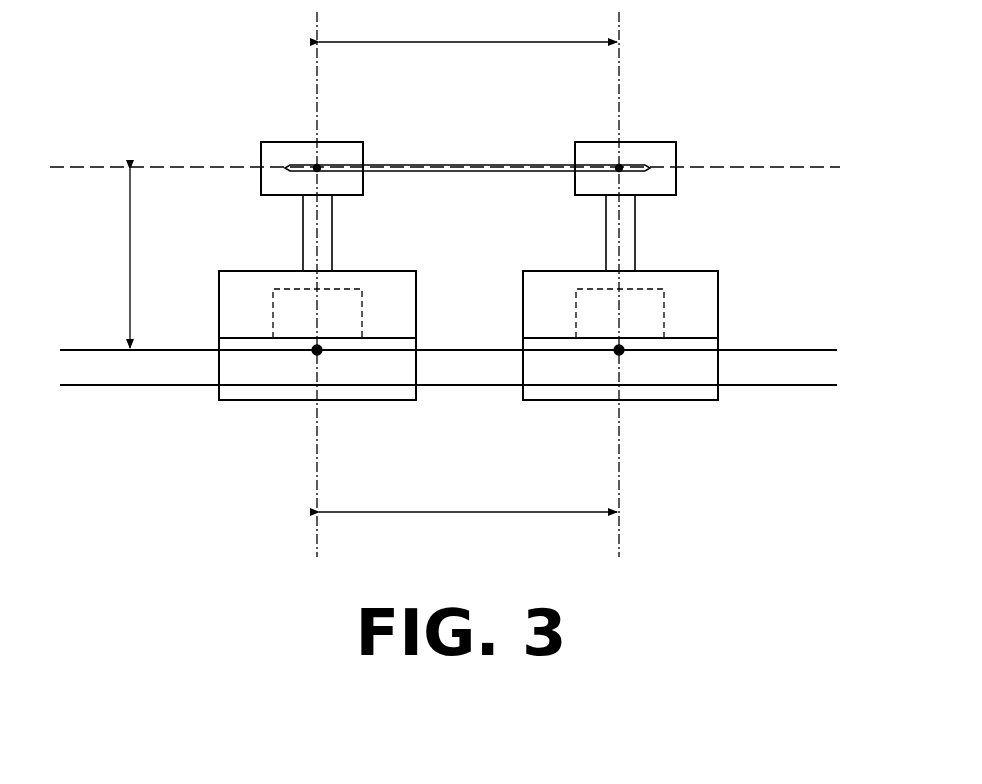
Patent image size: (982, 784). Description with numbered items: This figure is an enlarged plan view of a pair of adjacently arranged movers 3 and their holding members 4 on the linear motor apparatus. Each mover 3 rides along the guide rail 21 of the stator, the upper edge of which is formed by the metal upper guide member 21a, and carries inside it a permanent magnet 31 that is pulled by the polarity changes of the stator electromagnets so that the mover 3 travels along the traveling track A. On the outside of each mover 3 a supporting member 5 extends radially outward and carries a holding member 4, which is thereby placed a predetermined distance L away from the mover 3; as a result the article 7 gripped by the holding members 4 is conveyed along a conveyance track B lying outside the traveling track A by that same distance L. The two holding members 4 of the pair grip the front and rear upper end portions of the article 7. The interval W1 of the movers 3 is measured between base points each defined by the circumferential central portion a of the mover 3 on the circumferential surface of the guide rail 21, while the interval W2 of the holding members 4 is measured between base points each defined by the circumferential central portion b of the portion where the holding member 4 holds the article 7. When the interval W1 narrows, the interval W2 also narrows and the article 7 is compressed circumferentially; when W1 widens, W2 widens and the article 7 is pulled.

The mover 3 is at (215, 305).
The permanent magnet 31 is at (272, 298).
The holding member 4 is at (296, 141).
The supporting member 5 is at (303, 240).
The article 7 is at (457, 172).
The guide rail 21 is at (765, 344).
The upper guide member 21a is at (803, 350).
The circumferential central portion of the mover a is at (316, 354).
The circumferential central portion of the holding portion b is at (320, 168).
The traveling track A is at (115, 350).
The conveyance track B is at (80, 165).
The predetermined distance L is at (114, 258).
The interval of the movers W1 is at (468, 533).
The interval of the holding members W2 is at (468, 25).